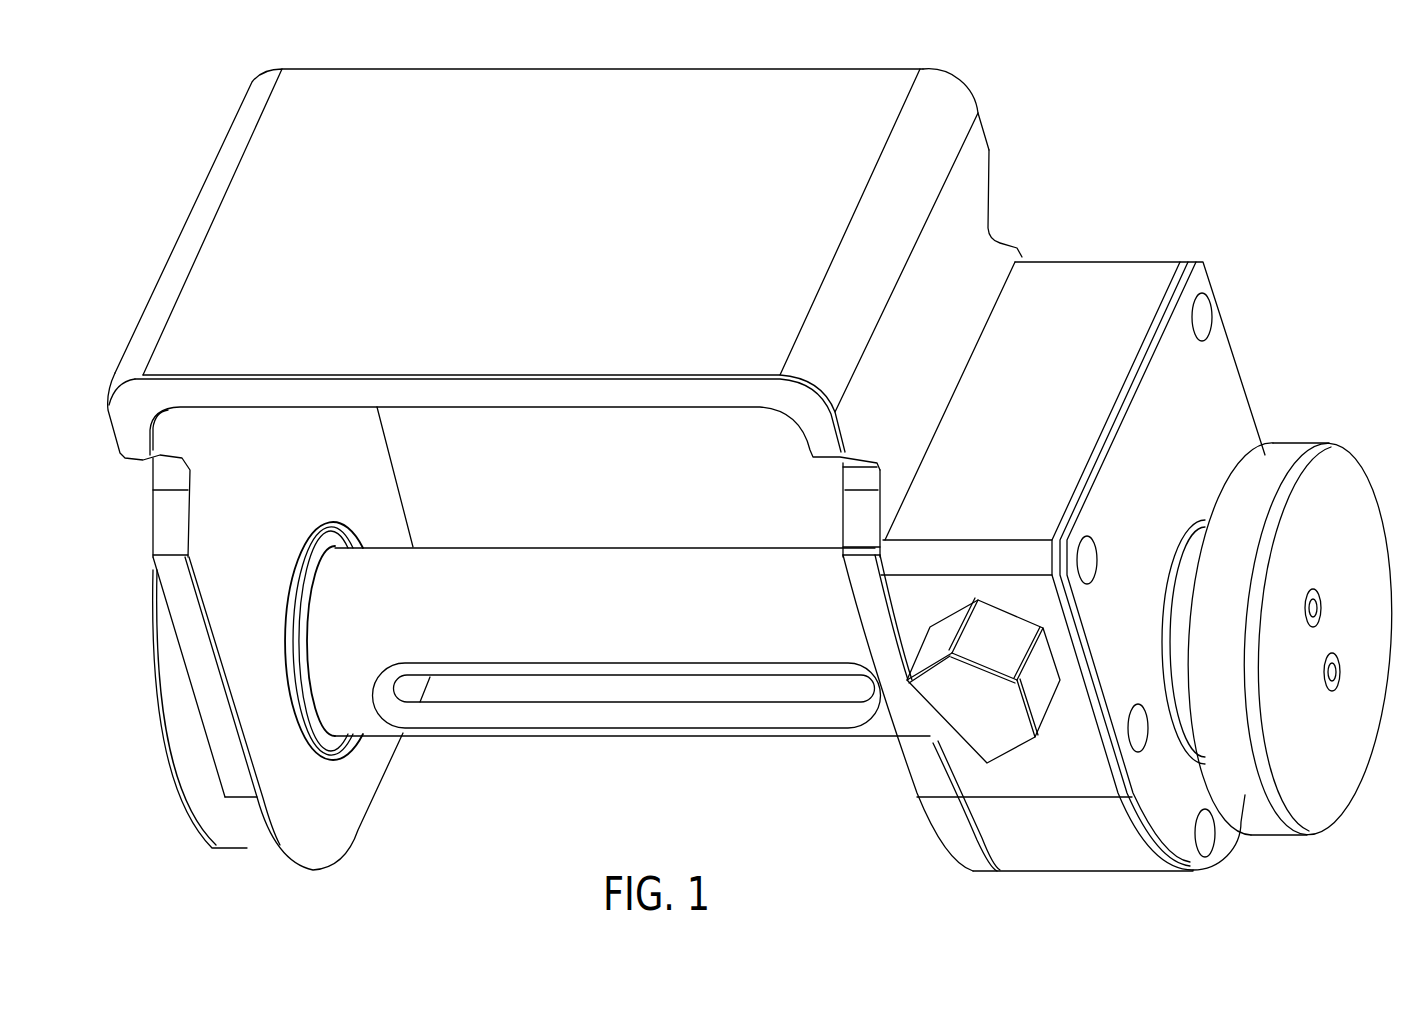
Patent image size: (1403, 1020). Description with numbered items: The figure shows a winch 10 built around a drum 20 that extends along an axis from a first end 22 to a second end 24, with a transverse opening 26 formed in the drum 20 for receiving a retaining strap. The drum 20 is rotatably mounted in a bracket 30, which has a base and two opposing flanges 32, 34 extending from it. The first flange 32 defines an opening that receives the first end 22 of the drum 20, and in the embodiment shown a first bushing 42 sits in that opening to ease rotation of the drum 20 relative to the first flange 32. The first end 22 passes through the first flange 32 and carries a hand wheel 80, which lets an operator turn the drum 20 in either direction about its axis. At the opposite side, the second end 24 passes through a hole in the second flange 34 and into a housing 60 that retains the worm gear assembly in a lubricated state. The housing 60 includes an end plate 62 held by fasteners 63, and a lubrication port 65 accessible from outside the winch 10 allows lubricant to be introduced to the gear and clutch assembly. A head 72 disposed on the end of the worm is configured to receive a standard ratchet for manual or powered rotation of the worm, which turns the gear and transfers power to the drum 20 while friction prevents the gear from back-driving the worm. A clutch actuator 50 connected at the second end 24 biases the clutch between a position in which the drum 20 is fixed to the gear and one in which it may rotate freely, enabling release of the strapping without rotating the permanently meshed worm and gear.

The winch 10 is at (1170, 152).
The drum 20 is at (667, 733).
The first end 22 is at (330, 753).
The second end 24 is at (893, 740).
The transverse opening 26 is at (738, 688).
The bracket 30 is at (818, 95).
The first flange 32 is at (303, 810).
The second flange 34 is at (970, 198).
The first bushing 42 is at (333, 757).
The clutch actuator 50 is at (1333, 482).
The housing 60 is at (1240, 382).
The end plate 62 is at (1245, 438).
The fasteners 63 is at (1203, 317).
The lubrication port 65 is at (1142, 860).
The head 72 is at (930, 720).
The hand wheel 80 is at (185, 810).